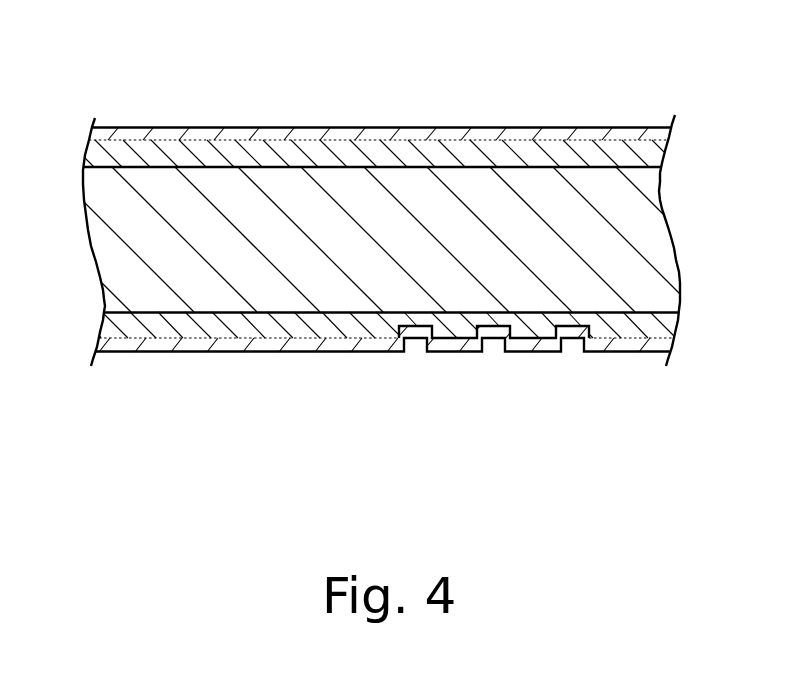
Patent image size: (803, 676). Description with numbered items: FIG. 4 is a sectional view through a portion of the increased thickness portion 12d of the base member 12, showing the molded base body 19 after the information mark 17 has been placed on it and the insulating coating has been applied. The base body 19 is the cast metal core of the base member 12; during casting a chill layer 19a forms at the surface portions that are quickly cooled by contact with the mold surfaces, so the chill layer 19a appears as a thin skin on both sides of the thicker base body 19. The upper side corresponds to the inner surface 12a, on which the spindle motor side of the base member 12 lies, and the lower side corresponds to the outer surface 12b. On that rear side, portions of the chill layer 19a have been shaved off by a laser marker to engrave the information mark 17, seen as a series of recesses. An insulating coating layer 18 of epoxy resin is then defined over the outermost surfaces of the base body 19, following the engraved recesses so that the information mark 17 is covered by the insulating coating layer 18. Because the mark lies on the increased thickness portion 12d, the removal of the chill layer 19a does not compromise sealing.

The base member 12 is at (127, 378).
The inner surface 12a is at (540, 122).
The outer surface 12b is at (617, 363).
The increased thickness portion 12d is at (677, 237).
The information mark 17 is at (548, 342).
The insulating coating layer 18 is at (345, 135).
The base body 19 is at (78, 143).
The chill layer 19a is at (660, 143).